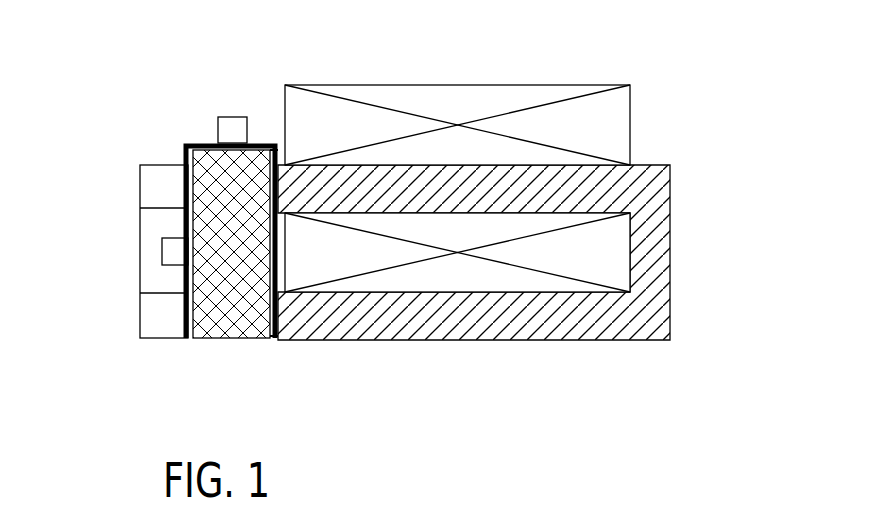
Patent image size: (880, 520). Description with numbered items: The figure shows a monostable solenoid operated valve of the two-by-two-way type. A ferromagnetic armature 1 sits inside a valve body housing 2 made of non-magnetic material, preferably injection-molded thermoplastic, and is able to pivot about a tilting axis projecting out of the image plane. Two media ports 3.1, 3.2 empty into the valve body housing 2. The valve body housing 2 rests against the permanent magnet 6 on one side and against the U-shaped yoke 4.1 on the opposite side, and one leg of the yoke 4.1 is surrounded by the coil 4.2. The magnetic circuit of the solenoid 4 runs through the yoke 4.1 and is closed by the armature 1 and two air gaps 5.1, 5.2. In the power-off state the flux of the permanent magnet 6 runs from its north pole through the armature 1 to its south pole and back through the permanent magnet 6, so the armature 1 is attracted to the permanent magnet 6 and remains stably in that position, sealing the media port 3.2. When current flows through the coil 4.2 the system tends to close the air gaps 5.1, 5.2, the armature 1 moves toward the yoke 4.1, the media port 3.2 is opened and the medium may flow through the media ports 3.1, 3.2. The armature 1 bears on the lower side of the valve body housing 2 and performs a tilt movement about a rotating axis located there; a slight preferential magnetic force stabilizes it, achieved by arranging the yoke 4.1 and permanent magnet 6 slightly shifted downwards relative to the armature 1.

The armature 1 is at (217, 325).
The valve body housing 2 is at (187, 152).
The media port 3.1 is at (230, 127).
The media port 3.2 is at (168, 250).
The solenoid 4 is at (527, 156).
The U-shaped yoke 4.1 is at (650, 219).
The coil 4.2 is at (620, 122).
The air gap 5.1 is at (273, 148).
The air gap 5.2 is at (272, 340).
The permanent magnet 6 is at (148, 220).